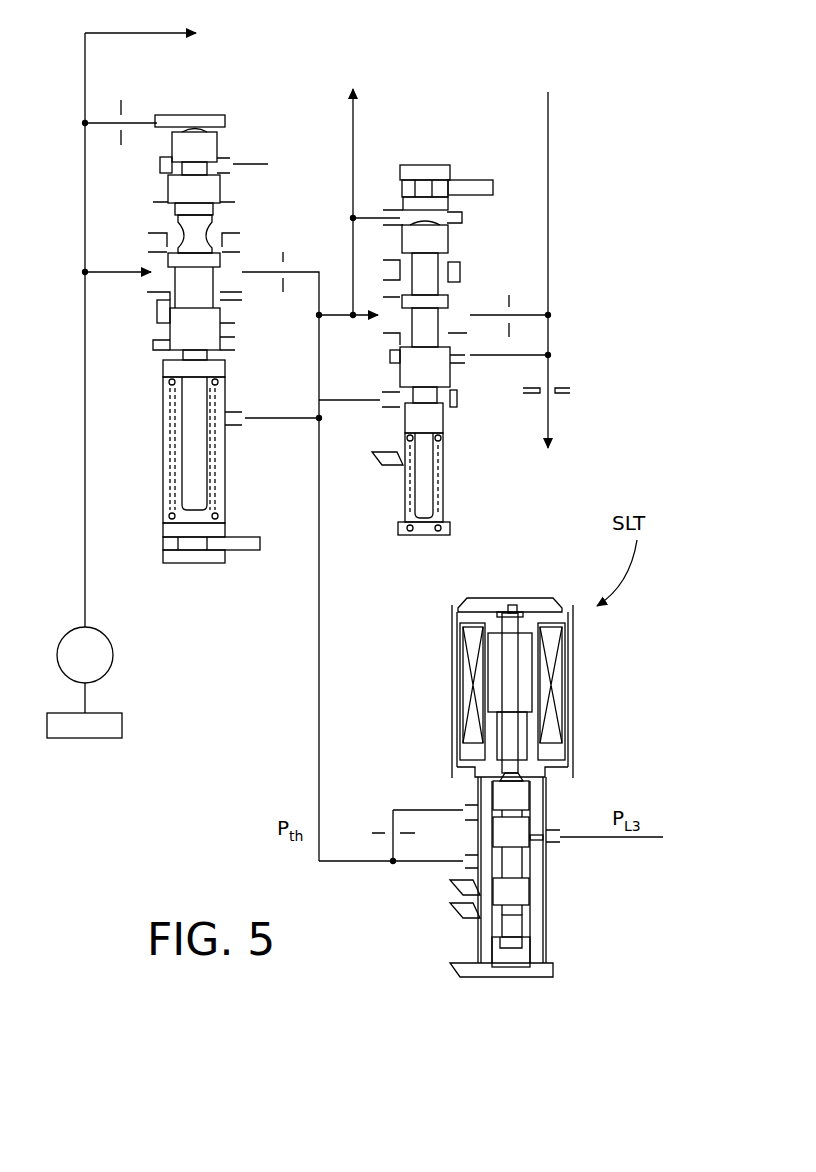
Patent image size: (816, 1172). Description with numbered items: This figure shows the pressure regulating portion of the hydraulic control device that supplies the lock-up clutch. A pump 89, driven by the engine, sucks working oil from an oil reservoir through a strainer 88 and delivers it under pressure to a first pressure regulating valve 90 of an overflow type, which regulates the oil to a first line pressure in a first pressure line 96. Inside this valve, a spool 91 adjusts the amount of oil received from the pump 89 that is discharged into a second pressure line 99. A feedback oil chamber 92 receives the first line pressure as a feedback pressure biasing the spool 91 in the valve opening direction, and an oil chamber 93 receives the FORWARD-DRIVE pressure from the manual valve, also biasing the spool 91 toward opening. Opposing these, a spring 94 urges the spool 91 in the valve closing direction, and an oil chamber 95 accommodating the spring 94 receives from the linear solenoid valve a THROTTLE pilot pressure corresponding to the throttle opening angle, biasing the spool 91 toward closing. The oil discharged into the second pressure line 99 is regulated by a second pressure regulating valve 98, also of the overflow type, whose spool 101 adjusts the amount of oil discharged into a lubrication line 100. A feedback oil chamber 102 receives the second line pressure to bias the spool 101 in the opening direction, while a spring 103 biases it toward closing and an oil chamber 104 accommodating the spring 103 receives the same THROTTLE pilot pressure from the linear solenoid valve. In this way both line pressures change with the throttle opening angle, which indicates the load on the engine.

The strainer 88 is at (112, 723).
The pump 89 is at (63, 642).
The first pressure regulating valve 90 is at (202, 374).
The spool 91 is at (177, 328).
The feedback oil chamber 92 is at (207, 118).
The oil chamber 93 is at (160, 163).
The spring 94 is at (168, 380).
The oil chamber 95 is at (165, 455).
The first pressure line 96 is at (135, 32).
The second pressure regulating valve 98 is at (439, 385).
The second pressure line 99 is at (355, 142).
The lubrication line 100 is at (548, 173).
The spool 101 is at (428, 272).
The feedback oil chamber 102 is at (457, 217).
The spring 103 is at (443, 530).
The oil chamber 104 is at (457, 400).